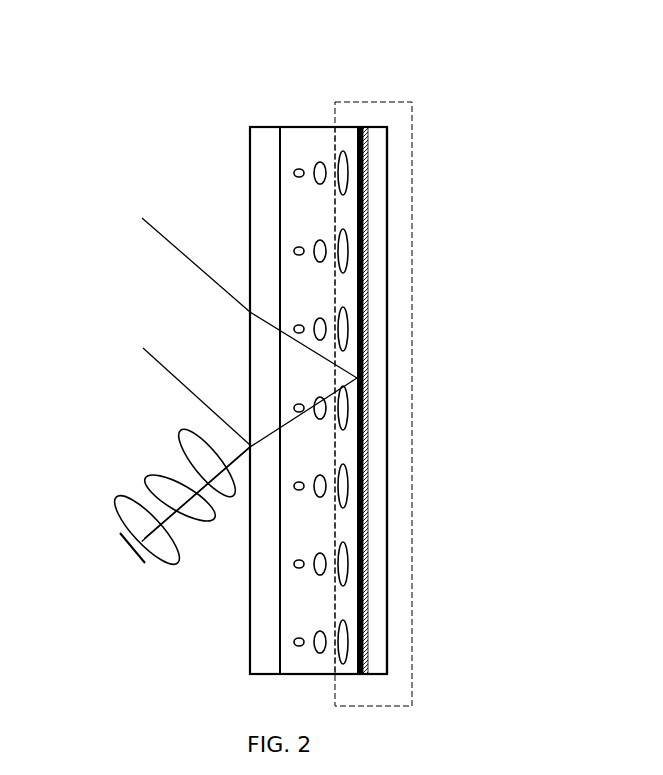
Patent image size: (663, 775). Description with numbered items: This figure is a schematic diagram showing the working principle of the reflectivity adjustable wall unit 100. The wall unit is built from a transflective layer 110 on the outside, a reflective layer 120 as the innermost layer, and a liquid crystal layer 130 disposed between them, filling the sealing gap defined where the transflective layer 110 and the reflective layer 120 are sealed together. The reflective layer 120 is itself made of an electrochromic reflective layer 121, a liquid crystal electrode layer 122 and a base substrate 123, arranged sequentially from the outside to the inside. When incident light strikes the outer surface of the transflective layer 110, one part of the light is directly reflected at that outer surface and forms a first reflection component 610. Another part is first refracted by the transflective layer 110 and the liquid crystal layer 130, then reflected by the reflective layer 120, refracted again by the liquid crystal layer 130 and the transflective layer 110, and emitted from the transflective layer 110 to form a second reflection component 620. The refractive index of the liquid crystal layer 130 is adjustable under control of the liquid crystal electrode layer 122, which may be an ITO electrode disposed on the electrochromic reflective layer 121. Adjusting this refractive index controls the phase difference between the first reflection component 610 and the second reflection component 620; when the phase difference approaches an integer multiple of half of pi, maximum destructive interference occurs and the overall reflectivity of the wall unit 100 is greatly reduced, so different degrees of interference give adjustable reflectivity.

The reflectivity adjustable wall unit 100 is at (418, 220).
The transflective layer 110 is at (262, 197).
The reflective layer 120 is at (413, 605).
The electrochromic reflective layer 121 is at (360, 237).
The liquid crystal electrode layer 122 is at (370, 347).
The base substrate 123 is at (377, 437).
The liquid crystal layer 130 is at (295, 565).
The first reflection component 610 is at (118, 493).
The second reflection component 620 is at (168, 570).